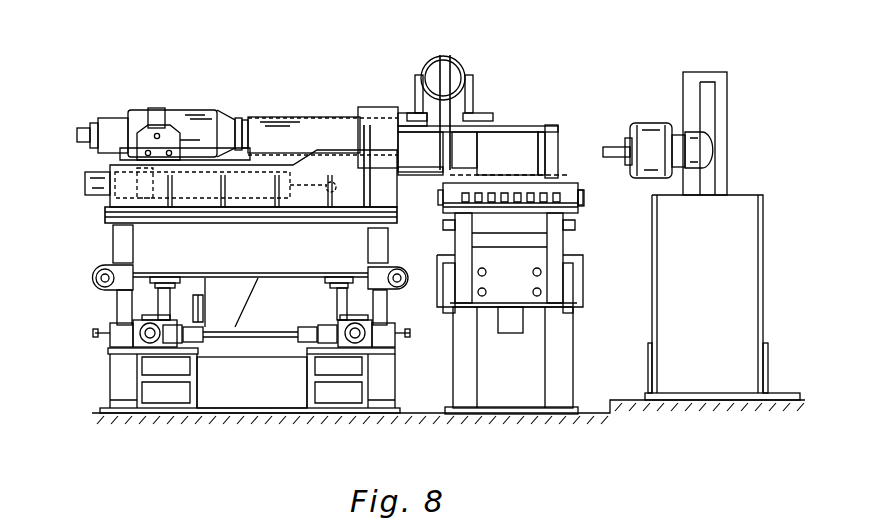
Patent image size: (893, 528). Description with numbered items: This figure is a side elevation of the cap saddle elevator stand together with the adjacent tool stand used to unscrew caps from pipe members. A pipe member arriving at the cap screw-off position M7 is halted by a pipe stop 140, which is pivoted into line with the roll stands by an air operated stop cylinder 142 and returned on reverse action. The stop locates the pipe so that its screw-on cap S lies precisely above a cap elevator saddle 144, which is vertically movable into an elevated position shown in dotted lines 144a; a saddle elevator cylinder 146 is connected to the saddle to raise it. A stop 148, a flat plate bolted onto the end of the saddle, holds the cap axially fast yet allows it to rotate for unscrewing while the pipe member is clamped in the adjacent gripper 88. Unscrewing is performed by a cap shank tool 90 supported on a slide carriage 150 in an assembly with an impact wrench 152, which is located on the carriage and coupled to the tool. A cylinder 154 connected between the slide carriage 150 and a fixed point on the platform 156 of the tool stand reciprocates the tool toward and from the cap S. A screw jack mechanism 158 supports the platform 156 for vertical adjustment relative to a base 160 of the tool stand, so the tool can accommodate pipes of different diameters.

The gripper 88 is at (713, 95).
The cap shank tool 90 is at (408, 112).
The pipe stop 140 is at (470, 125).
The stop cylinder 142 is at (428, 68).
The cap elevator saddle 144 is at (455, 206).
The elevated position of cap elevator saddle 144a is at (560, 180).
The saddle elevator cylinder 146 is at (517, 333).
The stop 148 is at (578, 200).
The slide carriage 150 is at (110, 158).
The impact wrench 152 is at (197, 110).
The cylinder 154 is at (88, 196).
The platform 156 is at (148, 247).
The screw jack mechanism 158 is at (337, 300).
The base 160 is at (175, 413).
The screw-on cap S is at (649, 122).
The cap screw-off position M7 is at (706, 141).